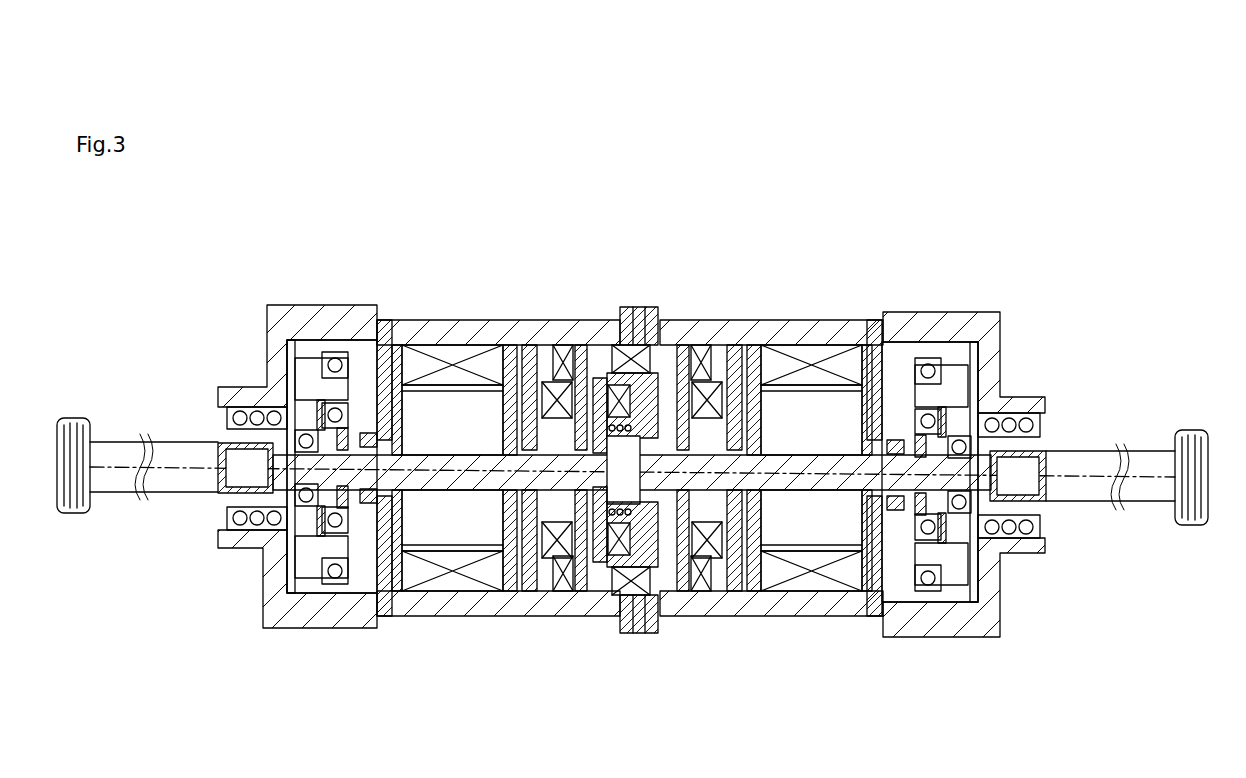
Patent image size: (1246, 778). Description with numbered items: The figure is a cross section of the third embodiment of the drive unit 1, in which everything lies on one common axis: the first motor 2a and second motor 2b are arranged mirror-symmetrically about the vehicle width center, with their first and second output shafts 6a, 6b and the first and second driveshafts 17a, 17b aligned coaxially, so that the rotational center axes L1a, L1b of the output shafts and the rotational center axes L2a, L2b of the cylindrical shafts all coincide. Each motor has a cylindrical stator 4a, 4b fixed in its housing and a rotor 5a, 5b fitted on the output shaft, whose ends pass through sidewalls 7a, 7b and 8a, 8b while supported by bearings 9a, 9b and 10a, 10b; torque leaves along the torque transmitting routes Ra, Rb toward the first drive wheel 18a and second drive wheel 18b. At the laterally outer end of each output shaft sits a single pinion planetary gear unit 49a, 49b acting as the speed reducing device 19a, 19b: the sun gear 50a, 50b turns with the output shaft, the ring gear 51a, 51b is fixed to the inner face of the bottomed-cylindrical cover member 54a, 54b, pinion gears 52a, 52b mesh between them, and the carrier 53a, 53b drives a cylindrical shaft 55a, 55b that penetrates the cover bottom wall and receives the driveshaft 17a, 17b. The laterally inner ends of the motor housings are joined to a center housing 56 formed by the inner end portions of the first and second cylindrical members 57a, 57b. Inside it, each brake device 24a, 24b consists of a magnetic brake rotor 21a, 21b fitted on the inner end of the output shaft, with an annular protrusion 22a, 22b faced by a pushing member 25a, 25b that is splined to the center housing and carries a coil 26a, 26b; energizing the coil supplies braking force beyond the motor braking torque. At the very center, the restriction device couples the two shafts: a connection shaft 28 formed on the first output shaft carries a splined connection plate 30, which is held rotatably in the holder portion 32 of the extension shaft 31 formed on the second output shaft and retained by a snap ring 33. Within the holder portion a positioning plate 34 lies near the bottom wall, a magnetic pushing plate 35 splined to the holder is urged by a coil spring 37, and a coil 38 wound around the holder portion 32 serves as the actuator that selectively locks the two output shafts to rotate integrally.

The drive unit 1 is at (221, 732).
The first motor 2a is at (836, 294).
The second motor 2b is at (442, 260).
The first stator 4a is at (783, 592).
The second stator 4b is at (490, 592).
The first rotor 5a is at (802, 592).
The second rotor 5b is at (457, 592).
The first output shaft 6a is at (825, 592).
The second output shaft 6b is at (432, 600).
The first sidewall 7a is at (735, 592).
The second sidewall 7b is at (530, 592).
The first sidewall 8a is at (880, 617).
The second sidewall 8b is at (382, 592).
The first bearing 9a is at (753, 592).
The second bearing 9b is at (510, 592).
The first bearing 10a is at (866, 592).
The second bearing 10b is at (397, 592).
The first driveshaft 17a is at (1087, 478).
The second driveshaft 17b is at (188, 468).
The first drive wheel 18a is at (1191, 526).
The second drive wheel 18b is at (74, 514).
The first speed reducing device 19a is at (955, 298).
The second speed reducing device 19b is at (285, 282).
The first brake rotor 21a is at (755, 343).
The second brake rotor 21b is at (510, 343).
The first annular protrusion 22a is at (735, 343).
The second annular protrusion 22b is at (530, 343).
The first brake device 24a is at (745, 268).
The second brake device 24b is at (521, 236).
The first pushing member 25a is at (707, 380).
The second pushing member 25b is at (557, 380).
The first coil 26a is at (701, 343).
The second coil 26b is at (558, 357).
The connection shaft 28 is at (645, 633).
The connection plate 30 is at (656, 372).
The extension shaft 31 is at (615, 600).
The holder portion 32 is at (618, 380).
The snap ring 33 is at (684, 343).
The positioning plate 34 is at (580, 343).
The pushing plate 35 is at (640, 343).
The coil spring 37 is at (630, 633).
The coil 38 is at (636, 320).
The first planetary gear unit 49a is at (972, 652).
The second planetary gear unit 49b is at (320, 665).
The first sun gear 50a is at (1028, 437).
The second sun gear 50b is at (238, 430).
The first ring gear 51a is at (972, 614).
The second ring gear 51b is at (312, 598).
The first pinion gears 52a is at (928, 602).
The second pinion gears 52b is at (335, 597).
The first carrier 53a is at (975, 575).
The second carrier 53b is at (298, 572).
The first cover member 54a is at (990, 358).
The second cover member 54b is at (283, 358).
The first cylindrical shaft 55a is at (1040, 513).
The second cylindrical shaft 55b is at (235, 505).
The center housing 56 is at (666, 650).
The first cylindrical member 57a is at (690, 592).
The second cylindrical member 57b is at (580, 592).
The rotational center axis L1a is at (818, 470).
The rotational center axis L1b is at (441, 450).
The rotational center axis L2a is at (1048, 474).
The rotational center axis L2b is at (215, 466).
The torque transmitting route Ra is at (916, 275).
The torque transmitting route Rb is at (380, 282).